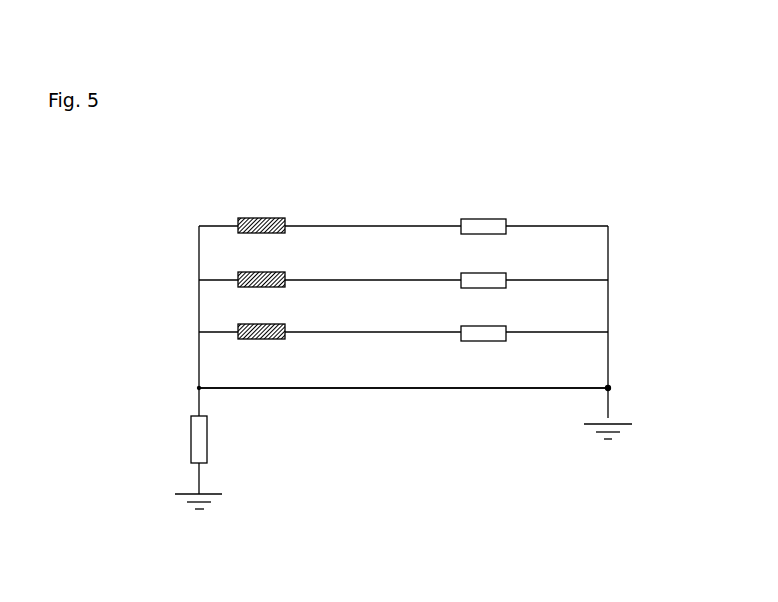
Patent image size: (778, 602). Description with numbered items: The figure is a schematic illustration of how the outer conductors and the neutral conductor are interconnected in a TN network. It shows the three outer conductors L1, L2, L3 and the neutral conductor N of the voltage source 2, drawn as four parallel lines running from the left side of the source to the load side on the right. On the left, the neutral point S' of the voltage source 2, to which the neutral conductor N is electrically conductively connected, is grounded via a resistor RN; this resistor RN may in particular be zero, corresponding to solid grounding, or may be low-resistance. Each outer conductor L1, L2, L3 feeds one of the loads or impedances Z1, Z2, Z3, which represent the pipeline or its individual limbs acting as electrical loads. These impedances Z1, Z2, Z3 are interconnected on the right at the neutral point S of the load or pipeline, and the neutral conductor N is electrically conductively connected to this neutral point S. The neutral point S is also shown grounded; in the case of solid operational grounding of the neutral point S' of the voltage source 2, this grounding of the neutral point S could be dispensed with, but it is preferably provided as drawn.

The voltage source 2 is at (241, 191).
The outer conductor L1 is at (261, 214).
The outer conductor L2 is at (261, 268).
The outer conductor L3 is at (261, 320).
The neutral conductor N is at (403, 374).
The impedance Z1 is at (483, 214).
The impedance Z2 is at (483, 268).
The impedance Z3 is at (483, 321).
The resistor RN is at (207, 462).
The neutral point of the load S is at (619, 373).
The neutral point of the voltage source S' is at (165, 365).